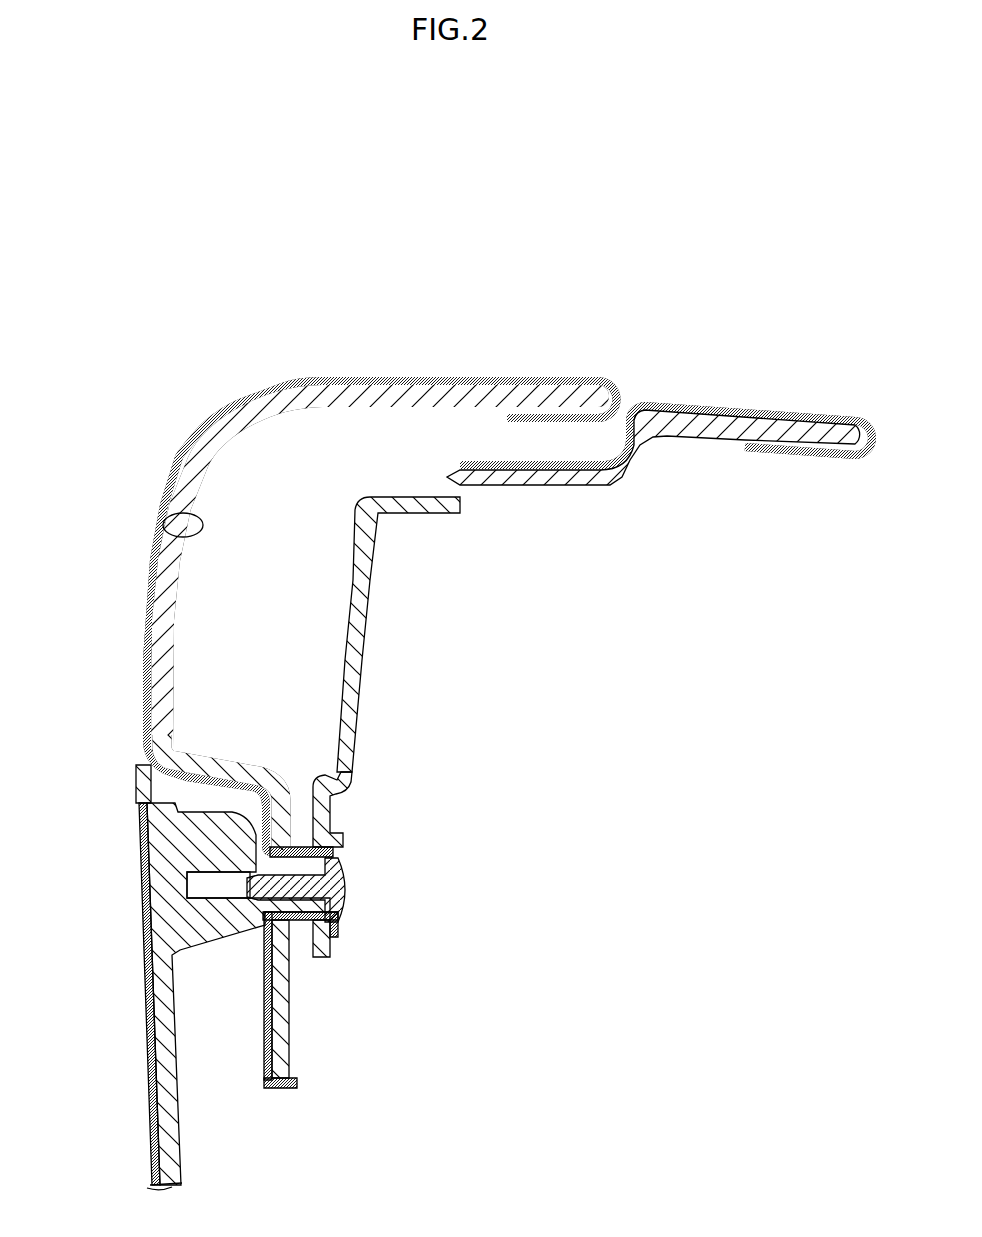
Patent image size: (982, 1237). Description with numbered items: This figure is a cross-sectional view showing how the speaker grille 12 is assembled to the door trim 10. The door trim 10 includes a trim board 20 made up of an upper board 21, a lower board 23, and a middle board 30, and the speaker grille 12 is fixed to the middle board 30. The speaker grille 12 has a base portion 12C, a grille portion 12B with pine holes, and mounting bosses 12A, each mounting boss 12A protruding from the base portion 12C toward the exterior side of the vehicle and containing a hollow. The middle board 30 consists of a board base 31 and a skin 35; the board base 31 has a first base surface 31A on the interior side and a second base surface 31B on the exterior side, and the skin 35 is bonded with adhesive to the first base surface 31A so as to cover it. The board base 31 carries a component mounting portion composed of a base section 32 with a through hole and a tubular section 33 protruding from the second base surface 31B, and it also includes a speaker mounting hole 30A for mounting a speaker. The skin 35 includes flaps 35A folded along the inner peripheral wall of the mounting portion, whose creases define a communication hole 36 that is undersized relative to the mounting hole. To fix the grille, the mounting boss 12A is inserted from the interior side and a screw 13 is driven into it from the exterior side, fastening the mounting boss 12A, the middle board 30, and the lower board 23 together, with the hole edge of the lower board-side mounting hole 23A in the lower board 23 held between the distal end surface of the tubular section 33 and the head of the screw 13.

The door trim 10 is at (731, 289).
The trim board 20 is at (637, 297).
The upper board 21 is at (682, 407).
The lower board 23 is at (353, 585).
The middle board 30 is at (518, 394).
The speaker mounting hole 30A is at (283, 1090).
The board base 31 is at (233, 410).
The first base surface 31A is at (172, 482).
The second base surface 31B is at (168, 538).
The base section 32 is at (322, 892).
The tubular section 33 is at (302, 935).
The skin 35 is at (150, 636).
The flaps 35A is at (332, 932).
The communication hole 36 is at (243, 870).
The speaker grille 12 is at (125, 838).
The mounting boss 12A is at (250, 890).
The grille portion 12B is at (147, 995).
The base portion 12C is at (164, 1095).
The screw 13 is at (345, 885).
The lower board-side mounting hole 23A is at (343, 860).